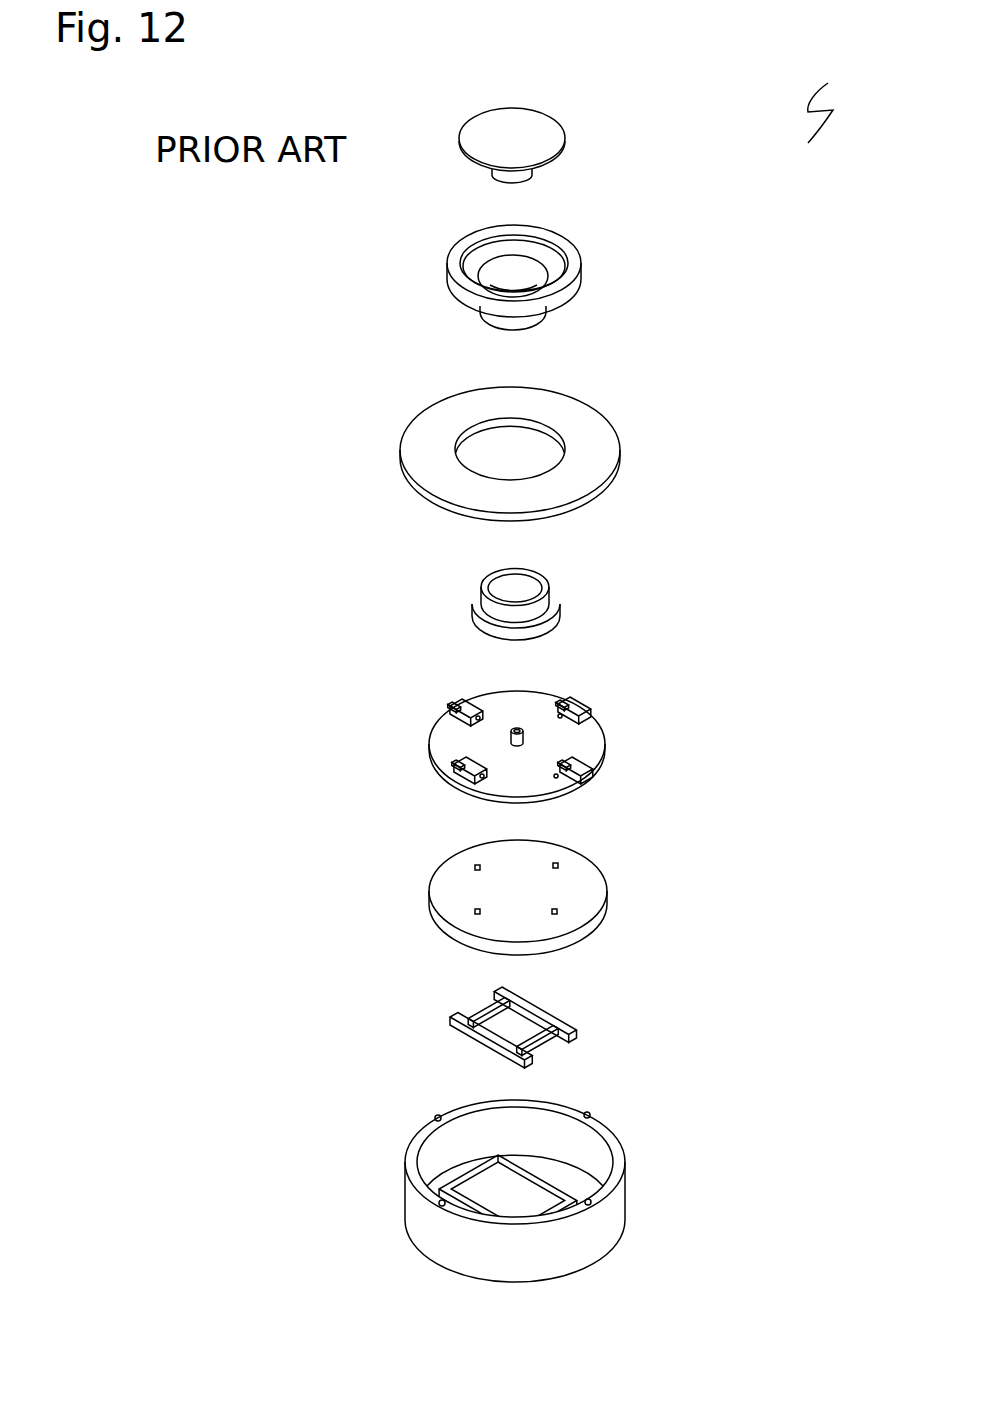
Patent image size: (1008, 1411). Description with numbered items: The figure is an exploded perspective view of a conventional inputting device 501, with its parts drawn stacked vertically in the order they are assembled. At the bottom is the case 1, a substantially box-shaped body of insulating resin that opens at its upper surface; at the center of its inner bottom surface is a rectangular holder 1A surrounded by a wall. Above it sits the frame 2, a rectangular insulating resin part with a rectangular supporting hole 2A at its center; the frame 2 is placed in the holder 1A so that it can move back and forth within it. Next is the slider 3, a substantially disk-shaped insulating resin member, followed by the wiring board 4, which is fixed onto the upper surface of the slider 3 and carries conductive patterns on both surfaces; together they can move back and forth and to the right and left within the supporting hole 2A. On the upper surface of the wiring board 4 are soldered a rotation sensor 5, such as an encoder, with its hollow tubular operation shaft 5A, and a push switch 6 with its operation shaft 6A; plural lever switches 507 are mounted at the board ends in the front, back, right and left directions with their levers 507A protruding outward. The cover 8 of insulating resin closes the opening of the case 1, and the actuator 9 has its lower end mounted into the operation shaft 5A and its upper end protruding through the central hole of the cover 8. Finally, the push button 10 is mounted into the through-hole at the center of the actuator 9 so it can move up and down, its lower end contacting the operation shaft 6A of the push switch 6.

The inputting device 501 is at (833, 98).
The push button 10 is at (565, 130).
The actuator 9 is at (583, 270).
The cover 8 is at (620, 428).
The rotation sensor 5 is at (501, 585).
The operation shaft 5A is at (506, 590).
The wiring board 4 is at (495, 733).
The lever switches 507 is at (455, 770).
The levers 507A is at (453, 706).
The push switch 6 is at (525, 742).
The operation shaft 6A is at (522, 734).
The slider 3 is at (607, 892).
The frame 2 is at (501, 1010).
The supporting hole 2A is at (505, 1025).
The case 1 is at (504, 1191).
The holder 1A is at (492, 1195).